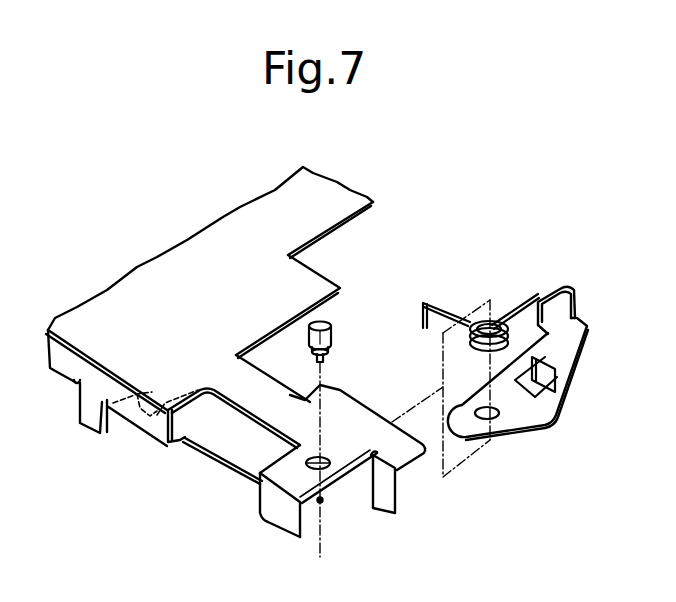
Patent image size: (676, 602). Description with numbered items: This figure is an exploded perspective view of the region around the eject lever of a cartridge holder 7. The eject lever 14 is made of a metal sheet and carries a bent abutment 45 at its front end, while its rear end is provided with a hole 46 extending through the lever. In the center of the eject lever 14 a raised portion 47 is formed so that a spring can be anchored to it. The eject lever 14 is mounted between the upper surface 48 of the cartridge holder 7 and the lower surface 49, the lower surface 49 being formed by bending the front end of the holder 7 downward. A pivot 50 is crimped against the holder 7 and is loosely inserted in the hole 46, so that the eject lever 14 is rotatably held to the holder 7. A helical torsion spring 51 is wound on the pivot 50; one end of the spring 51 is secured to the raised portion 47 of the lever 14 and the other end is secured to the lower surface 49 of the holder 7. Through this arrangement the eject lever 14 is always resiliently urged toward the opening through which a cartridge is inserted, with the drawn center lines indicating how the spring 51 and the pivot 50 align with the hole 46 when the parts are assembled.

The cartridge holder 7 is at (166, 248).
The eject lever 14 is at (543, 424).
The bent abutment 45 is at (563, 290).
The hole 46 is at (488, 420).
The raised portion 47 is at (557, 378).
The upper surface 48 is at (367, 415).
The lower surface 49 is at (343, 500).
The pivot 50 is at (332, 336).
The helical torsion spring 51 is at (517, 305).